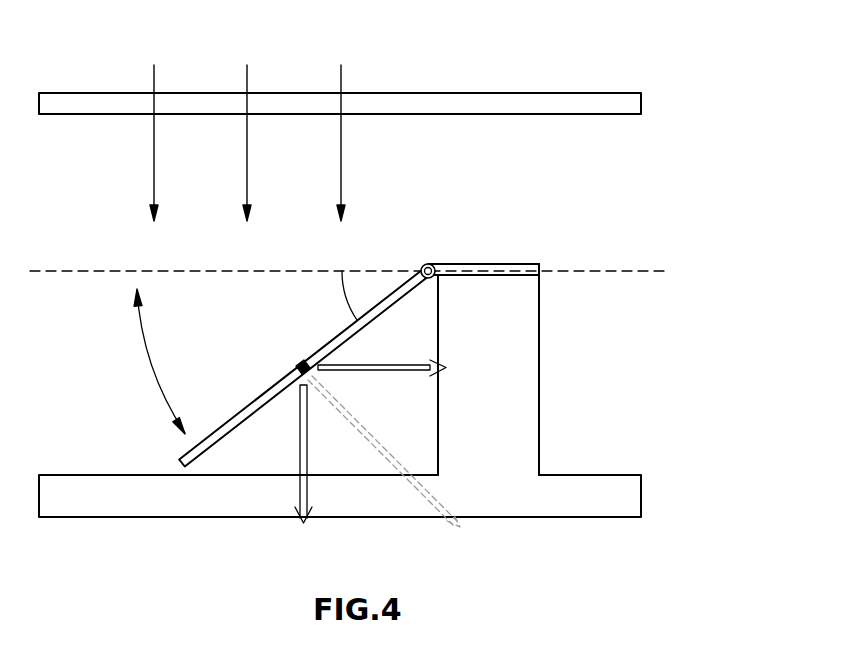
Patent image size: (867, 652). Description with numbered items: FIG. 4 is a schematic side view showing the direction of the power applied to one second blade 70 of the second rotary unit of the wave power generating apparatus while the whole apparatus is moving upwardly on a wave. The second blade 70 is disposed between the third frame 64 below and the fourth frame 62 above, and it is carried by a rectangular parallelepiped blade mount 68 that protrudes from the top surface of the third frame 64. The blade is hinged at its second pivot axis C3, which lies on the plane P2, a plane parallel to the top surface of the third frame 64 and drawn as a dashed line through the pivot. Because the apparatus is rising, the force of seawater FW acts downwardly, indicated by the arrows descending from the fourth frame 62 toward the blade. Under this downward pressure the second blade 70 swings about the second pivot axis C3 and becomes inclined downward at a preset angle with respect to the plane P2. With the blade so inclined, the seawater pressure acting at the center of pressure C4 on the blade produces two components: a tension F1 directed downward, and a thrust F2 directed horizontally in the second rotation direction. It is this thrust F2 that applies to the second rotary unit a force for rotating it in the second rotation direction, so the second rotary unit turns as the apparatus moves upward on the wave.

The fourth frame 62 is at (535, 100).
The third frame 64 is at (632, 495).
The blade mount 68 is at (525, 306).
The second blade 70 is at (268, 397).
The force of seawater FW is at (154, 165).
The plane P2 is at (625, 270).
The second pivot axis C3 is at (425, 262).
The center of seawater pressure C4 is at (299, 361).
The tension F1 is at (312, 491).
The thrust F2 is at (397, 374).